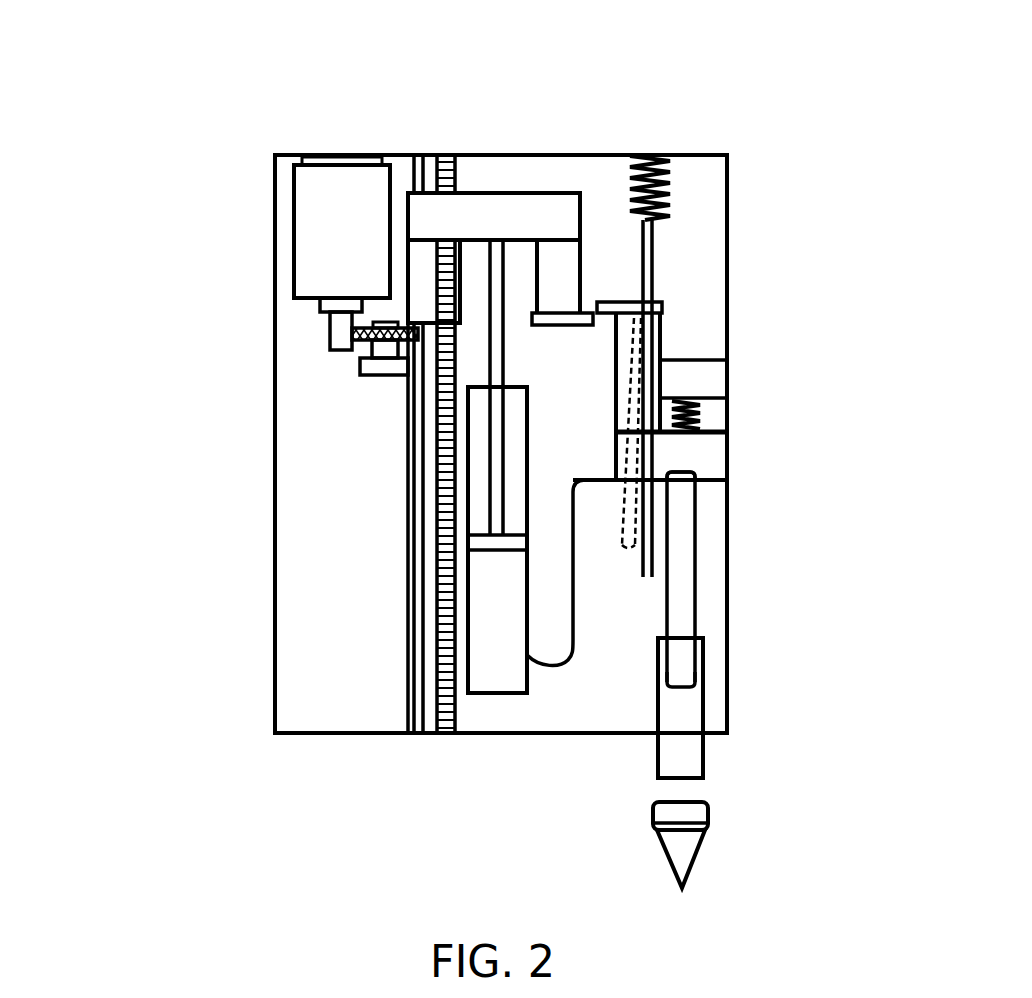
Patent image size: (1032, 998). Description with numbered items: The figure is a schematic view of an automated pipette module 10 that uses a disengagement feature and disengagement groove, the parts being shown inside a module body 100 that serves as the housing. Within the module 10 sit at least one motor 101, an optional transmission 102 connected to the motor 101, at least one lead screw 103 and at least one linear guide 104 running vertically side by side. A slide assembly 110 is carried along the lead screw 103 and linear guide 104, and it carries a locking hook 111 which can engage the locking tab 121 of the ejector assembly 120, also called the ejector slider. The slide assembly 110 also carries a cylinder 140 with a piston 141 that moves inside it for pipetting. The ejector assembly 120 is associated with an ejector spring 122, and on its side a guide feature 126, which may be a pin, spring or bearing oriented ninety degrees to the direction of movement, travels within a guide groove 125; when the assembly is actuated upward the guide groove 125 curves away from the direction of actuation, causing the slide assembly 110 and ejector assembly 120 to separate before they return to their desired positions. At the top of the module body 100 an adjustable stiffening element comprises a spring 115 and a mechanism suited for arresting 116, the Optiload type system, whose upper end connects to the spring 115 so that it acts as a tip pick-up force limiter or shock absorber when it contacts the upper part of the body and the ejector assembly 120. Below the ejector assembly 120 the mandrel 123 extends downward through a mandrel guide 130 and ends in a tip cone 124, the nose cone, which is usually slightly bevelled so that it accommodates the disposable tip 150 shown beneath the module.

The module 10 is at (190, 133).
The housing 100 is at (266, 710).
The motor 101 is at (285, 272).
The transmission 102 is at (354, 372).
The lead screw 103 is at (461, 173).
The linear guide 104 is at (408, 169).
The slide assembly 110 is at (498, 208).
The locking hook 111 is at (555, 331).
The spring 115 is at (668, 171).
The stiffening element 116 is at (661, 236).
The ejector assembly 120 is at (665, 320).
The locking tab 121 is at (607, 294).
The ejector spring 122 is at (709, 423).
The mandrel 123 is at (700, 572).
The tip cone 124 is at (690, 687).
The guide groove 125 is at (629, 500).
The guide feature 126 is at (640, 333).
The mandrel guide 130 is at (707, 670).
The cylinder 140 is at (497, 702).
The piston 141 is at (486, 448).
The disposable tip 150 is at (658, 847).